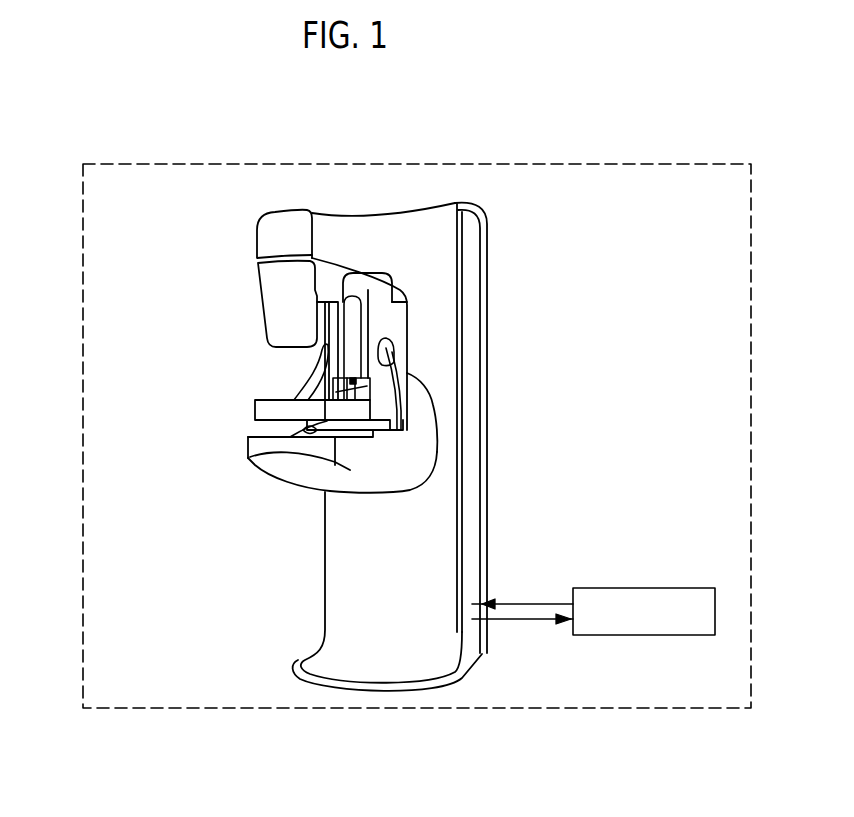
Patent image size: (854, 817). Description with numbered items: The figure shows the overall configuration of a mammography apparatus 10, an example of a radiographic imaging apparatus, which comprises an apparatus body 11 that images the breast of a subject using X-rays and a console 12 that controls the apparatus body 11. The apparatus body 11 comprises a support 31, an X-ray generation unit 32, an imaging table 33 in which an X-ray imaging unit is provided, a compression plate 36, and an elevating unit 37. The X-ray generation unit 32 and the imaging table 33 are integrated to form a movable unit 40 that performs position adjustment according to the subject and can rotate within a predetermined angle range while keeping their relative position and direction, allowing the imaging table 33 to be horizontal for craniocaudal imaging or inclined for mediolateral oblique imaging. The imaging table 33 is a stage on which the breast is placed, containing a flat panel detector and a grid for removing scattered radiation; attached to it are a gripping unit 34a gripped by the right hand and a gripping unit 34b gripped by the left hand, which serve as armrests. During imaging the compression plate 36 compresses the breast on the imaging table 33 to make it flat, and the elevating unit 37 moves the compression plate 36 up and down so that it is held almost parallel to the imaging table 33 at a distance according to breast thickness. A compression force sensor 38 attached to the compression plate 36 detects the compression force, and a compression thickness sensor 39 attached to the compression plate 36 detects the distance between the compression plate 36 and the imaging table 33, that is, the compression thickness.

The mammography apparatus 10 is at (83, 197).
The apparatus body 11 is at (172, 250).
The console 12 is at (683, 588).
The support 31 is at (480, 277).
The X-ray generation unit 32 is at (259, 237).
The imaging table 33 is at (255, 447).
The gripping unit 34a is at (356, 387).
The gripping unit 34b is at (307, 383).
The compression plate 36 is at (257, 412).
The elevating unit 37 is at (382, 323).
The compression force sensor 38 is at (353, 380).
The compression thickness sensor 39 is at (417, 425).
The movable unit 40 is at (421, 446).